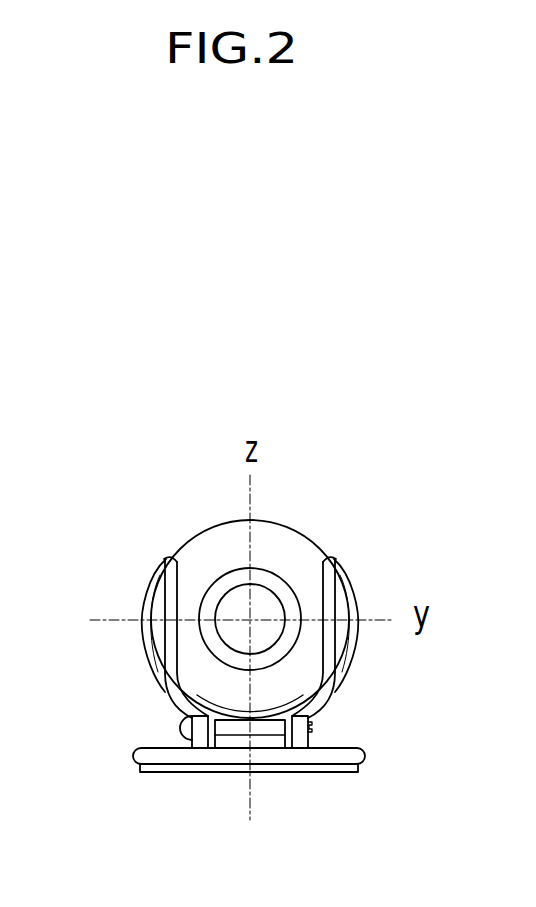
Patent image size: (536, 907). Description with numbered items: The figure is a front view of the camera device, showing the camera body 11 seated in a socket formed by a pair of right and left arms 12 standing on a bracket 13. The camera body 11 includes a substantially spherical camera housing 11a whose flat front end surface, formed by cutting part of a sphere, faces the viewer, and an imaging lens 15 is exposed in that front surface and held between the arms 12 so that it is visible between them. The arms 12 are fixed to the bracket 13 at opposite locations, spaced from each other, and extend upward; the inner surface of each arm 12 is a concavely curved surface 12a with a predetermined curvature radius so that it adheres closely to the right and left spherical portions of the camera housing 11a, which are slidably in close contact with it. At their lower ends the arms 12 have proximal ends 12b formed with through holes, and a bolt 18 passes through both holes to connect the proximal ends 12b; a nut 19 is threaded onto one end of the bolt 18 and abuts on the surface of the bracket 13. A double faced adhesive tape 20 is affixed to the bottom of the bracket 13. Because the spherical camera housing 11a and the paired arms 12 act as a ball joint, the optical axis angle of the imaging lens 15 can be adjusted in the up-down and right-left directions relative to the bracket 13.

The camera body 11 is at (290, 528).
The camera housing 11a is at (290, 557).
The arms 12 is at (157, 570).
The concavely curved surface 12a is at (147, 651).
The proximal ends 12b is at (210, 748).
The bracket 13 is at (353, 757).
The imaging lens 15 is at (243, 625).
The bolt 18 is at (268, 730).
The nut 19 is at (173, 752).
The double faced adhesive tape 20 is at (330, 773).